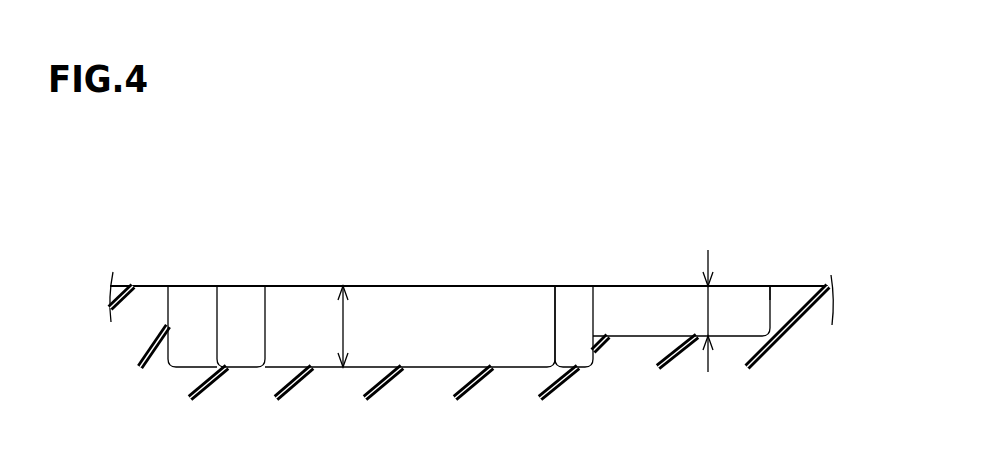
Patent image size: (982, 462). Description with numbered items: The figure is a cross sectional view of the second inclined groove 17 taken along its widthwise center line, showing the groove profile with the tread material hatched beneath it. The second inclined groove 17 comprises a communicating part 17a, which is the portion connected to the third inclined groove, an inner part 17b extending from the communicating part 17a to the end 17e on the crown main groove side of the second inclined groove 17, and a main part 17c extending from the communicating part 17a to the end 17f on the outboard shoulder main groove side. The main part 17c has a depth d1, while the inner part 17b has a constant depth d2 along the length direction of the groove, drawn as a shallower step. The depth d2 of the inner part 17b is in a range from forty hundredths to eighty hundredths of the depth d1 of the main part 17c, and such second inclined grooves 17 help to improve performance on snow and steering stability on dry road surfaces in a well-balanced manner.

The second inclined groove 17 is at (461, 278).
The communicating part 17a is at (574, 330).
The inner part 17b is at (648, 315).
The main part 17c is at (393, 330).
The end on the crown main groove side 17e is at (770, 307).
The end on the outboard shoulder main groove side 17f is at (168, 286).
The depth of the main part d1 is at (343, 320).
The depth of the inner part d2 is at (709, 310).